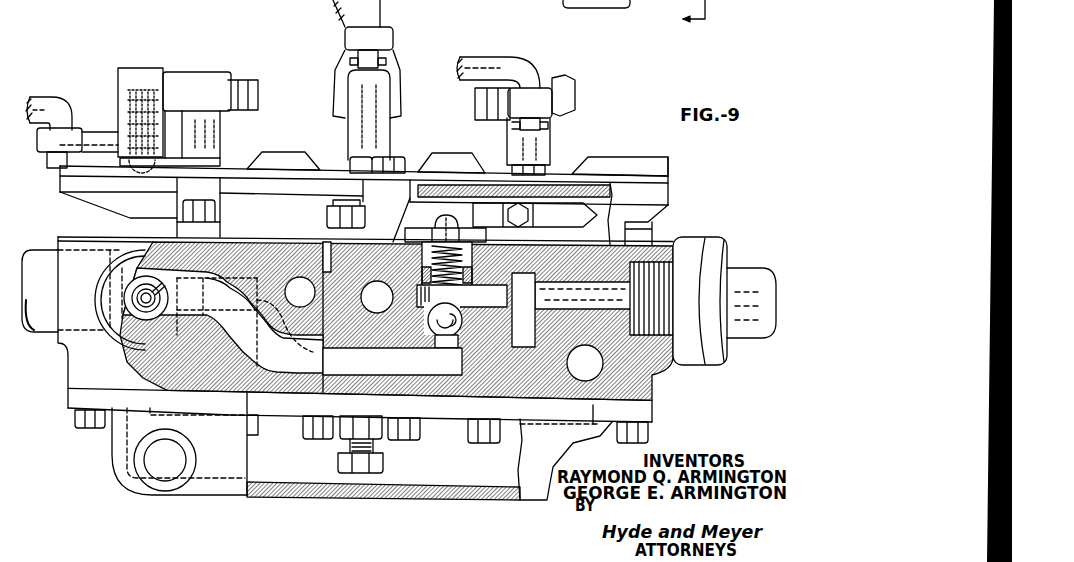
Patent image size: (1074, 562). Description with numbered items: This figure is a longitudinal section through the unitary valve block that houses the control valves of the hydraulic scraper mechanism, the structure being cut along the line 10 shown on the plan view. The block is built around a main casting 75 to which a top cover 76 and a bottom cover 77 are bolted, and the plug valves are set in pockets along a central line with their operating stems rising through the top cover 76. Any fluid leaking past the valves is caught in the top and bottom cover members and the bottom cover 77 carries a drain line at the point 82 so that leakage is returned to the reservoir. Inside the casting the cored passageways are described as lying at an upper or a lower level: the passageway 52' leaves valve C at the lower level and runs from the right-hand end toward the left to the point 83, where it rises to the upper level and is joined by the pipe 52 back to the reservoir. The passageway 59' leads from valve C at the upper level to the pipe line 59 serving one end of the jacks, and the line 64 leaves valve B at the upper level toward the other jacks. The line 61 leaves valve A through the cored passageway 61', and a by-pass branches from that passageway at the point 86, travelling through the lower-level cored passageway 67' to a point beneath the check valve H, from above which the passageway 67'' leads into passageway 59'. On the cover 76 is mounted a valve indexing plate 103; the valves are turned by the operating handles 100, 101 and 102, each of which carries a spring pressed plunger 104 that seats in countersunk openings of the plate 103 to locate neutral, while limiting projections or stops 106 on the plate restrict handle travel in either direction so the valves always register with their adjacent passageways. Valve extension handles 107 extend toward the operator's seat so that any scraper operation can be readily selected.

The line 10—10 of Fig. 8 10 is at (634, 14).
The pipe 52 is at (70, 308).
The passageway 52' is at (365, 320).
The pipe line 59 is at (703, 301).
The passageway 59' is at (583, 295).
The pipe line 61 is at (209, 310).
The cored passageway 61' is at (300, 292).
The line 64 is at (423, 264).
The cored passageway 67' is at (392, 361).
The passageway 67'' is at (462, 296).
The main casting 75 is at (652, 392).
The top cover 76 is at (137, 226).
The bottom cover 77 is at (482, 499).
The drain line point 82 is at (167, 480).
The point 83 is at (232, 338).
The point 86 is at (258, 340).
The operating handle 100 is at (95, 130).
The operating handle 101 is at (385, 38).
The operating handle 102 is at (540, 102).
The valve indexing plate 103 is at (658, 181).
The spring pressed plunger 104 is at (148, 162).
The limiting projections or stops 106 is at (287, 162).
The valve extension handles 107 is at (45, 100).
The check valve H is at (459, 323).